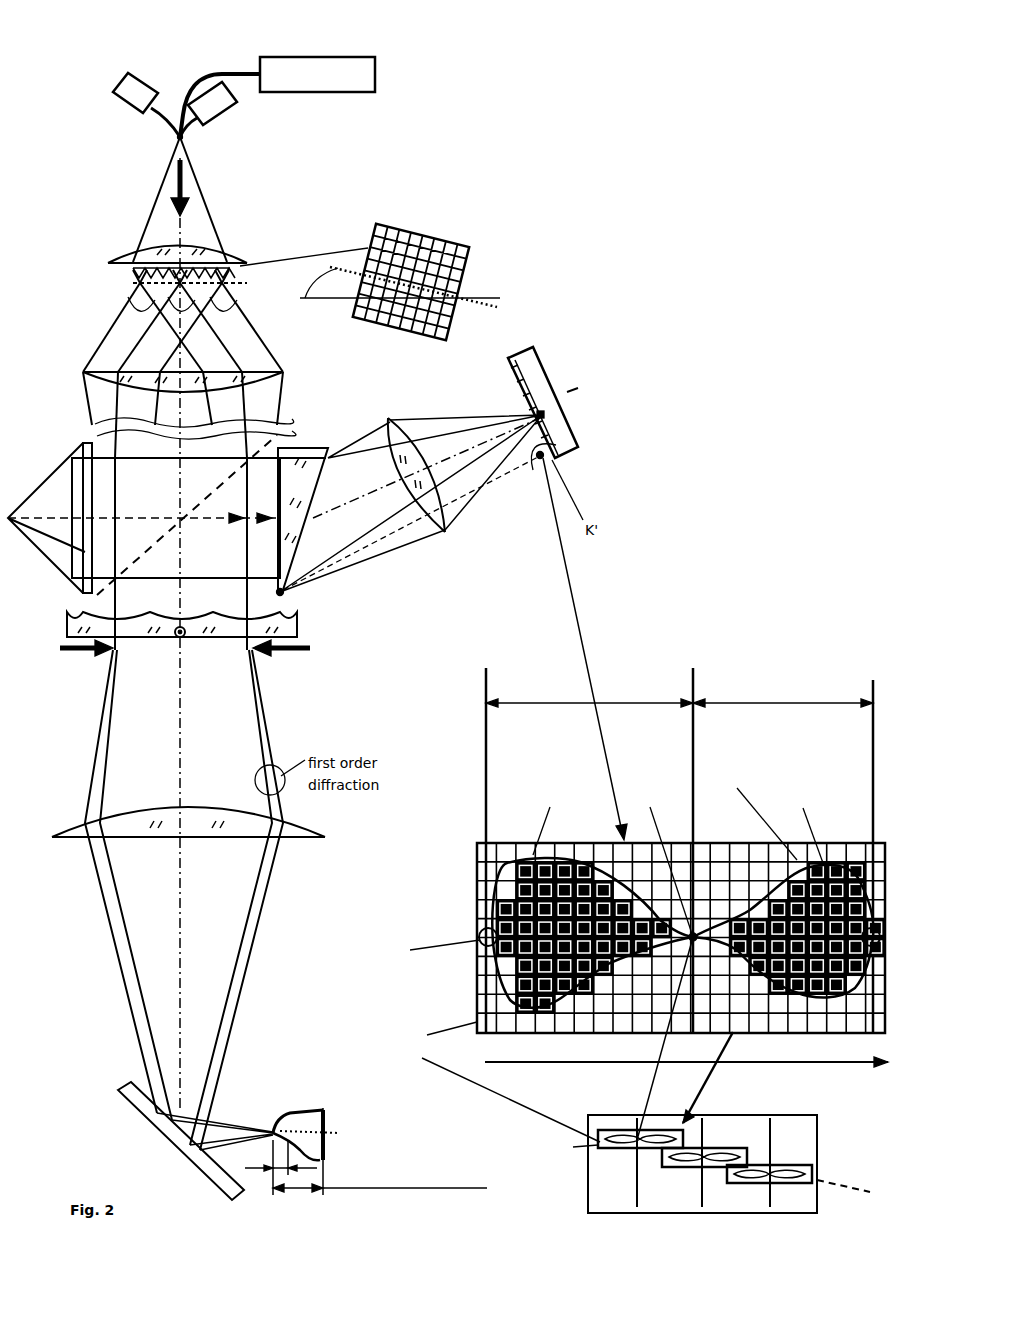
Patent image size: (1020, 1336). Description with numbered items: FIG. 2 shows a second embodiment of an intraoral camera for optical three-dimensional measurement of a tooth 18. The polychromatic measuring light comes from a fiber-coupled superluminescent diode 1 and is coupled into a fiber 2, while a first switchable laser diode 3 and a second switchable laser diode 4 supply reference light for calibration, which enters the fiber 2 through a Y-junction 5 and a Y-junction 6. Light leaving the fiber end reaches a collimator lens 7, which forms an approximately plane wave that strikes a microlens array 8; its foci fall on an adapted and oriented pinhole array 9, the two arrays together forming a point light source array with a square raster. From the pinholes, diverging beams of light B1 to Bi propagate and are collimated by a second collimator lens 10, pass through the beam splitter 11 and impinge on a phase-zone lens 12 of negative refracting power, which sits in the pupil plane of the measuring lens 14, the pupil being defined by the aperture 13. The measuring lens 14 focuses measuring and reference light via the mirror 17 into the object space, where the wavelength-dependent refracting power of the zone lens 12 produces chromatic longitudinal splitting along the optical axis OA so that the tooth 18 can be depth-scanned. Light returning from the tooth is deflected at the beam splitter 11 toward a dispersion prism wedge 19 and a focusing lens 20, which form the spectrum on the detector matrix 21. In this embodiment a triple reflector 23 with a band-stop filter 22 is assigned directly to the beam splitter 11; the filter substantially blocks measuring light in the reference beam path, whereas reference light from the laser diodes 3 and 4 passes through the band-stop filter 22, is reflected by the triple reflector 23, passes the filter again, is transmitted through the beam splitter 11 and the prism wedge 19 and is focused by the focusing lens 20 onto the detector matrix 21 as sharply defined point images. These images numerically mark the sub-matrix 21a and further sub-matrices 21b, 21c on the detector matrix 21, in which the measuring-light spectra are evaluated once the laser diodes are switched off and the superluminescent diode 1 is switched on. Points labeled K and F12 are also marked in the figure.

The superluminescent diode 1 is at (363, 73).
The fiber 2 is at (185, 85).
The first switchable laser diode 3 is at (112, 87).
The second switchable laser diode 4 is at (227, 115).
The Y-junction 5 is at (175, 134).
The Y-junction 6 is at (182, 141).
The collimator lens 7 is at (110, 262).
The microlens array 8 is at (282, 258).
The pinhole array 9 is at (132, 284).
The second collimator lens 10 is at (84, 375).
The beam splitter 11 is at (93, 603).
The phase-zone lens 12 is at (297, 624).
The aperture 13 is at (312, 648).
The measuring lens 14 is at (100, 825).
The mirror 17 is at (157, 1120).
The tooth 18 is at (327, 1150).
The dispersion prism wedge 19 is at (293, 446).
The focusing lens 20 is at (447, 530).
The detector matrix 21 is at (560, 434).
The sub-matrix 21a is at (583, 613).
The sub-matrix 21b is at (663, 1157).
The sub-matrix 21c is at (727, 1175).
The band-stop filter 22 is at (88, 592).
The triple reflector 23 is at (53, 475).
The point K is at (284, 592).
The focal point of lens array 12 F12 is at (186, 630).
The diverging beam of light B1 is at (127, 300).
The diverging beam of light Bi is at (222, 302).
The optical axis OA is at (165, 633).